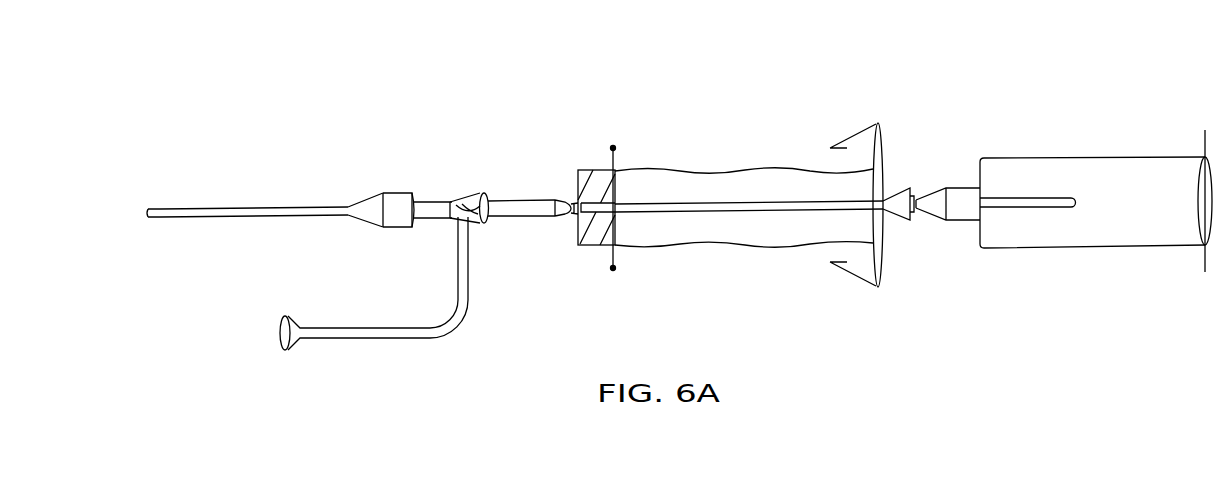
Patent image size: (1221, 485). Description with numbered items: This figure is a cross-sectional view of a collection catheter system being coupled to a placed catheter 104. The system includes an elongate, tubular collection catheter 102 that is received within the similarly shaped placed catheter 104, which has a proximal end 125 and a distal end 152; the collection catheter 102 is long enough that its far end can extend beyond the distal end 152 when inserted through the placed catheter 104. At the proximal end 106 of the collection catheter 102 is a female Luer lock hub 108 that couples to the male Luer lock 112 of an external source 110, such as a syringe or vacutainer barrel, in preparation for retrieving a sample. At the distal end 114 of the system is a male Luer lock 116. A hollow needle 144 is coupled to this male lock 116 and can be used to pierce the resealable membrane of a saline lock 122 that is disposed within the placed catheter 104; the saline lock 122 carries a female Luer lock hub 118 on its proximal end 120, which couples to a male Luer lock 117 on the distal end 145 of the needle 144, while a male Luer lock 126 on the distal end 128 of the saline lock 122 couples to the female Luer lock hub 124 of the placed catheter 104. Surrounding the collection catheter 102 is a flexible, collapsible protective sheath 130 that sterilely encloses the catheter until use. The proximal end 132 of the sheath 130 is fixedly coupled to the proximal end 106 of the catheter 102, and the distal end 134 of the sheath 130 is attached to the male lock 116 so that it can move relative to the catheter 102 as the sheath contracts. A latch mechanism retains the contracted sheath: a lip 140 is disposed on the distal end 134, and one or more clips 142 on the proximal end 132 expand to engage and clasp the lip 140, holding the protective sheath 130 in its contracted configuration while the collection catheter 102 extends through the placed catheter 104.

The collection catheter 102 is at (733, 185).
The placed catheter 104 is at (238, 181).
The proximal end 106 is at (894, 231).
The female Luer lock hub 108 is at (898, 180).
The external source 110 is at (1092, 134).
The male Luer lock 112 is at (941, 228).
The distal end 114 is at (591, 164).
The male Luer lock 116 is at (580, 259).
The male Luer lock 117 is at (565, 184).
The female Luer lock hub 118 is at (470, 189).
The proximal end 120 is at (484, 234).
The saline lock 122 is at (447, 227).
The female Luer lock hub 124 is at (364, 193).
The proximal end 125 is at (352, 232).
The male Luer lock 126 is at (395, 227).
The distal end 128 is at (399, 184).
The protective sheath 130 is at (700, 166).
The proximal end 132 is at (857, 146).
The distal end 134 is at (629, 268).
The lip 140 is at (613, 160).
The clips 142 is at (853, 292).
The hollow needle 144 is at (512, 226).
The distal end 145 is at (567, 231).
The distal end 152 is at (152, 188).